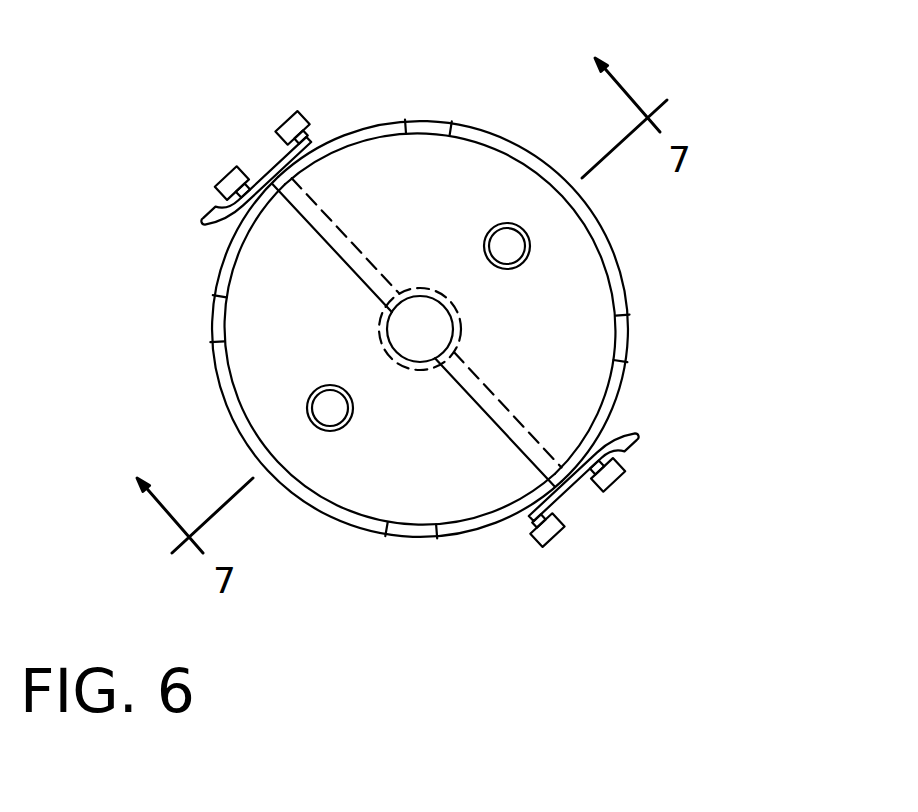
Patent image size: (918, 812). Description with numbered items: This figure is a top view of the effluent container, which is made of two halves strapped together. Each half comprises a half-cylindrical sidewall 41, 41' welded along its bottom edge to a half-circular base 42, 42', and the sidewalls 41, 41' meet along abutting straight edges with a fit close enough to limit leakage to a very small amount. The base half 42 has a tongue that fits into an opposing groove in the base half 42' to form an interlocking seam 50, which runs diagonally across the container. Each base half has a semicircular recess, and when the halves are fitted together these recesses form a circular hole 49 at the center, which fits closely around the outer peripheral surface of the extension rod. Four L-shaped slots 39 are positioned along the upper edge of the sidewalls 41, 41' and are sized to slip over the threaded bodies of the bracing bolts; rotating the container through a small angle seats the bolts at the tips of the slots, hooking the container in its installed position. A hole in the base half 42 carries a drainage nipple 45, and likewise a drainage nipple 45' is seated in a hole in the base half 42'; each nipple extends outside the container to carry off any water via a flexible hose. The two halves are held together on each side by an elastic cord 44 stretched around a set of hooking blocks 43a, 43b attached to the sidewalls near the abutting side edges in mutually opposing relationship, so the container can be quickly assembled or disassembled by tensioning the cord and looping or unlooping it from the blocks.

The L-shaped slot 39 is at (433, 105).
The half-cylindrical sidewall 41 is at (387, 381).
The half-cylindrical sidewall 41' is at (511, 301).
The half-circular base 42 is at (352, 354).
The half-circular base 42' is at (450, 277).
The hooking block 43a is at (562, 542).
The hooking block 43b is at (624, 476).
The elastic cord 44 is at (592, 492).
The drainage nipple 45 is at (366, 428).
The drainage nipple 45' is at (534, 274).
The circular hole 49 is at (405, 333).
The interlocking seam 50 is at (335, 262).